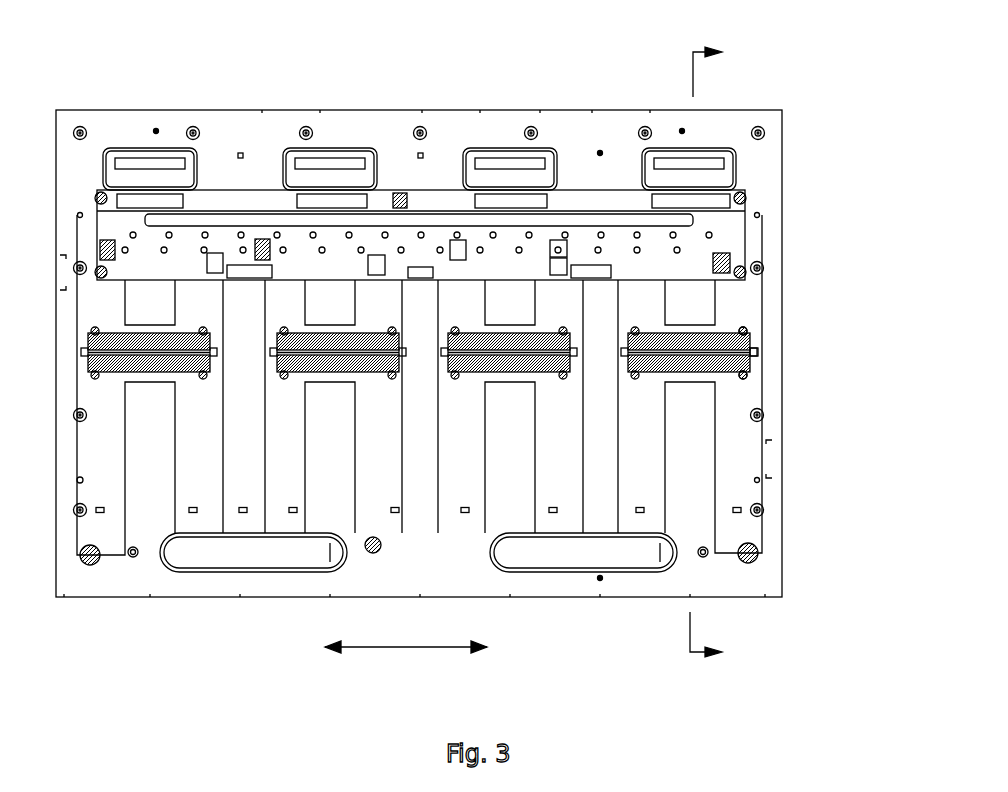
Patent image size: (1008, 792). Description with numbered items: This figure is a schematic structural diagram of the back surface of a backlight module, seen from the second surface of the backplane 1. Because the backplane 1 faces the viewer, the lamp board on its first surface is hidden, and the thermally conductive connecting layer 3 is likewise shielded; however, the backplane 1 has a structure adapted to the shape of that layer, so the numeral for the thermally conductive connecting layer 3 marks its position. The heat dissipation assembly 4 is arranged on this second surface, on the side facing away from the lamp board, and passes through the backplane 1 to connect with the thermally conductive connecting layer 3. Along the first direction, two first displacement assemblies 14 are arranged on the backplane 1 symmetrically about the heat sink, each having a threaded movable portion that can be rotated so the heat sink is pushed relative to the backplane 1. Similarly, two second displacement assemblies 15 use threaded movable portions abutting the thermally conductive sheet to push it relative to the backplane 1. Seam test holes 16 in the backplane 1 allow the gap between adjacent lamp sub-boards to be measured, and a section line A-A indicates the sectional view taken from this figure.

The backplane 1 is at (765, 178).
The thermally conductive connecting layer 3 is at (743, 440).
The heat dissipation assembly 4 is at (747, 368).
The first displacement assembly 14 is at (757, 355).
The second displacement assembly 15 is at (737, 508).
The seam test hole 16 is at (600, 150).